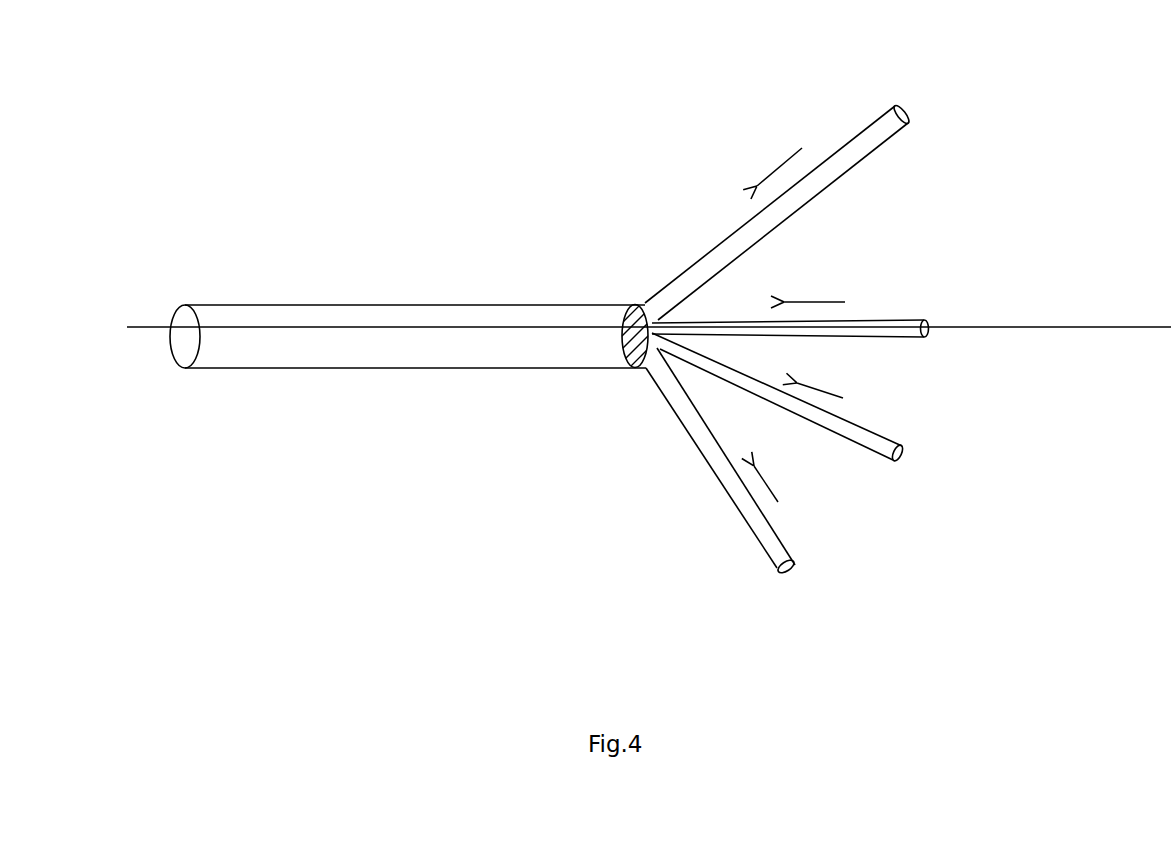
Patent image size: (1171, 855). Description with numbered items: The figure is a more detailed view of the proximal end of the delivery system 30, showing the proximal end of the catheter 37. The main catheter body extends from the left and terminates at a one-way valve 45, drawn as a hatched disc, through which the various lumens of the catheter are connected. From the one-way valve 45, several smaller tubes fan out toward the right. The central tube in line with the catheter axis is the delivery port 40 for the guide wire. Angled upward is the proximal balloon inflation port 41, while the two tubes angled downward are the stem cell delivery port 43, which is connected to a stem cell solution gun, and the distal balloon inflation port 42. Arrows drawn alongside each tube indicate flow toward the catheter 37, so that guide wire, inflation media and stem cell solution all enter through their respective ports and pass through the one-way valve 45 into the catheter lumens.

The multi-lumen device assembly 30 is at (292, 86).
The catheter 37 is at (285, 305).
The delivery port 40 is at (903, 318).
The proximal balloon inflation port 41 is at (858, 128).
The distal balloon inflation port 42 is at (777, 532).
The stem cell delivery port 43 is at (865, 427).
The one-way valve 45 is at (630, 350).